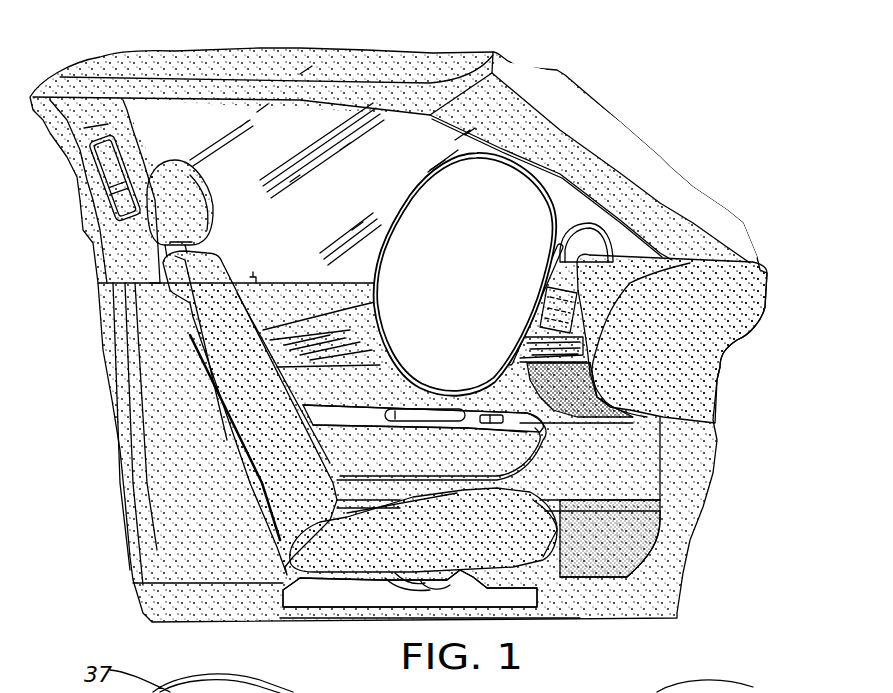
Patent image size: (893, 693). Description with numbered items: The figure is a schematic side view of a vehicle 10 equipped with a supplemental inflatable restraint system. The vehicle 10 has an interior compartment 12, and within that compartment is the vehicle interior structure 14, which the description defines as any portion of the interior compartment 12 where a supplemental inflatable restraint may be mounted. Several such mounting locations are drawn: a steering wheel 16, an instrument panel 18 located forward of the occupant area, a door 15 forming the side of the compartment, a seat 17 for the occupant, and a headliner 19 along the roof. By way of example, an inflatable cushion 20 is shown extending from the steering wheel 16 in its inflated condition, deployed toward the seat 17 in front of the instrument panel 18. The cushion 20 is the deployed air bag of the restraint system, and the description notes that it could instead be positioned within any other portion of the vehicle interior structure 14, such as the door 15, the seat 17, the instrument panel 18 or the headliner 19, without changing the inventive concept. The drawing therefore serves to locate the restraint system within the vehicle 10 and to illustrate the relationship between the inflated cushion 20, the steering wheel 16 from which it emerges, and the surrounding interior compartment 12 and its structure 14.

The vehicle 10 is at (475, 72).
The interior compartment 12 is at (160, 405).
The vehicle interior structure 14 is at (320, 318).
The door 15 is at (345, 290).
The steering wheel 16 is at (553, 273).
The seat 17 is at (233, 348).
The instrument panel 18 is at (680, 310).
The headliner 19 is at (253, 83).
The inflatable cushion 20 is at (530, 167).